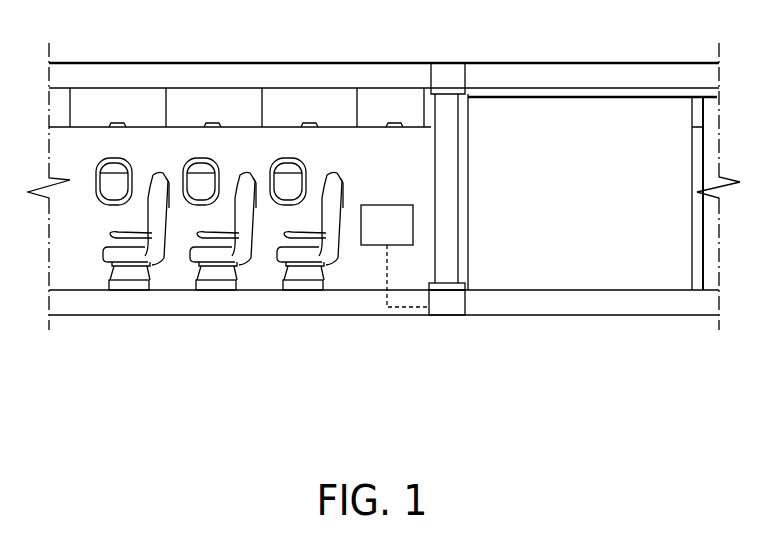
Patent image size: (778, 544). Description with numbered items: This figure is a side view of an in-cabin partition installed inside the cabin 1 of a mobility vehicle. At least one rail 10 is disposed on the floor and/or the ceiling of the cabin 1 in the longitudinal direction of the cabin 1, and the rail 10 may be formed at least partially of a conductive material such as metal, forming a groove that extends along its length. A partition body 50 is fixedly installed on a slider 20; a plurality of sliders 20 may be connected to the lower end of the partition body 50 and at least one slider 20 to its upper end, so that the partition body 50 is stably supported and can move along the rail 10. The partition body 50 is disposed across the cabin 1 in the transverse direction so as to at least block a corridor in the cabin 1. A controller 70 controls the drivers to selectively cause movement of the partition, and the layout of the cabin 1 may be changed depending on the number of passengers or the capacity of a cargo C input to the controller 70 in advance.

The cabin 1 is at (370, 145).
The rail 10 is at (562, 80).
The cargo C is at (617, 120).
The partition body 50 is at (448, 116).
The slider 20 is at (447, 302).
The controller 70 is at (395, 256).